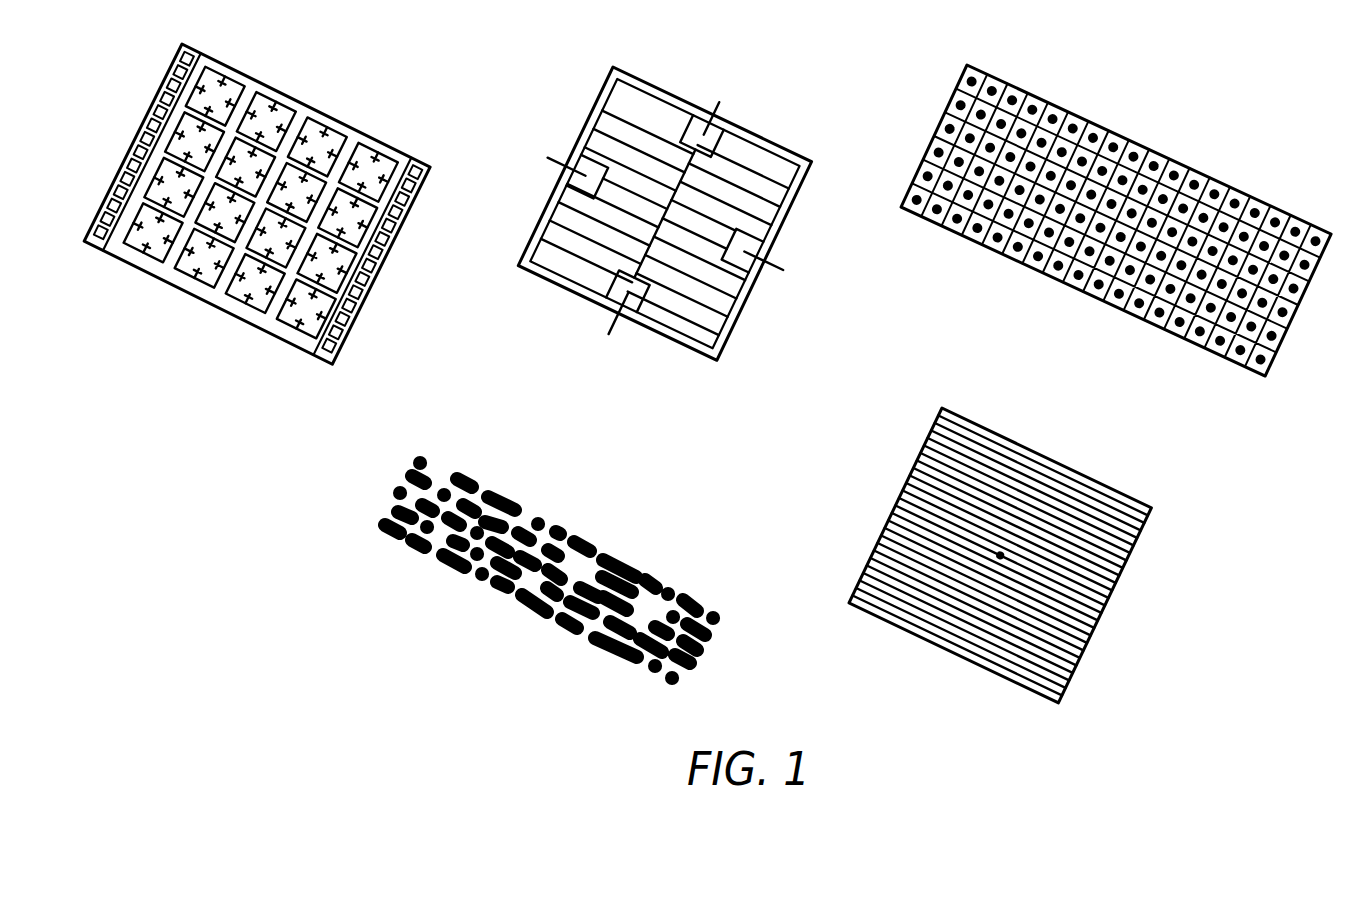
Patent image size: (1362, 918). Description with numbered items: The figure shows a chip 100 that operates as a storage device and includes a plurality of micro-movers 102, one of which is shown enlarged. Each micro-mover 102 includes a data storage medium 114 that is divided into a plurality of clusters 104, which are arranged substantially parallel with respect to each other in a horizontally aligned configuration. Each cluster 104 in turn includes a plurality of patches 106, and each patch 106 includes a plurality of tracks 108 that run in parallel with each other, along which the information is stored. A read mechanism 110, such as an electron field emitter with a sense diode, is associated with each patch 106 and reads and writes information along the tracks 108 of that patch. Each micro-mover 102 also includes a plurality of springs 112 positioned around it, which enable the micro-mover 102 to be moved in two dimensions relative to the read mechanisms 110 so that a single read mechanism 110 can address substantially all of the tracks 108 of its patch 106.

The chip 100 is at (324, 237).
The micro-mover 102 is at (512, 282).
The cluster 104 is at (674, 229).
The patch 106 is at (1257, 372).
The track 108 is at (866, 573).
The read mechanism 110 is at (1111, 146).
The spring 112 is at (612, 323).
The data storage medium 114 is at (598, 83).